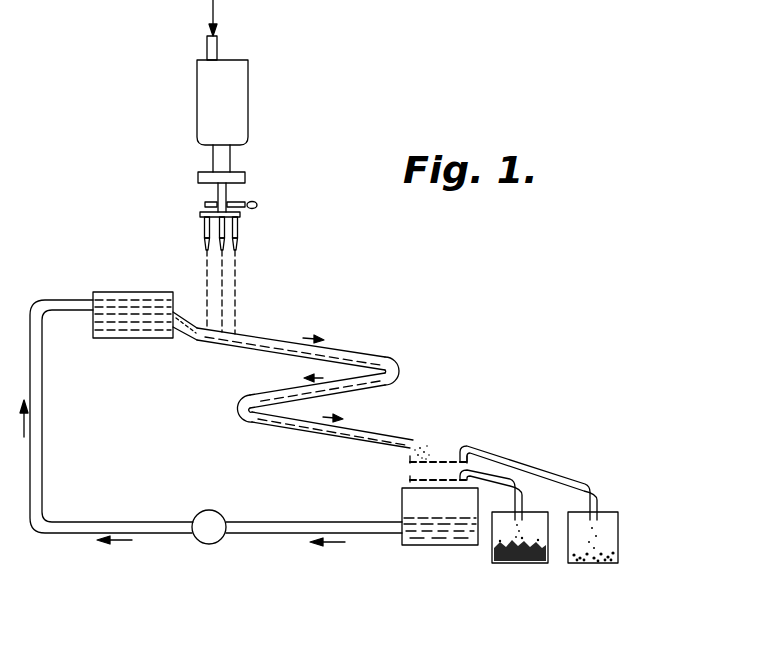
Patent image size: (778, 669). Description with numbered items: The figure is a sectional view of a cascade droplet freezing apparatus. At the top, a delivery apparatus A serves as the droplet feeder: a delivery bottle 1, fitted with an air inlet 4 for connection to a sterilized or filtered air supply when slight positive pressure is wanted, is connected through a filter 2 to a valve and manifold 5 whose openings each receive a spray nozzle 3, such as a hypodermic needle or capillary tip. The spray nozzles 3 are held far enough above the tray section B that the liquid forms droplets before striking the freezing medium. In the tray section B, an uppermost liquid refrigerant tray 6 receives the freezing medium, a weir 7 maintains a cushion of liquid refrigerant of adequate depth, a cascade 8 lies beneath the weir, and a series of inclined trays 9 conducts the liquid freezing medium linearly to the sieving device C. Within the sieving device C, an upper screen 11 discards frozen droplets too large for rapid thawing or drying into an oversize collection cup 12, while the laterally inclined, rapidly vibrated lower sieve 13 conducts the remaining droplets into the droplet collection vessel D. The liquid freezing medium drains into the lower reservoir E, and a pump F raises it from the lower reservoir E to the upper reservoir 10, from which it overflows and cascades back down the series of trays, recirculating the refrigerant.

The delivery bottle 1 is at (207, 90).
The filter 2 is at (200, 175).
The spray nozzles 3 is at (205, 224).
The air inlet 4 is at (207, 42).
The valve and manifold 5 is at (250, 204).
The uppermost liquid refrigerant tray 6 is at (255, 342).
The weir 7 is at (170, 327).
The cascade 8 is at (188, 338).
The inclined trays 9 is at (295, 400).
The upper reservoir 10 is at (115, 325).
The upper screen 11 is at (437, 460).
The oversize collection cup 12 is at (605, 563).
The lower sieve 13 is at (410, 479).
The delivery apparatus A is at (268, 128).
The tray section B is at (373, 346).
The sieving device C is at (453, 447).
The droplet collection vessel D is at (522, 560).
The lower reservoir E is at (432, 538).
The pump F is at (213, 541).